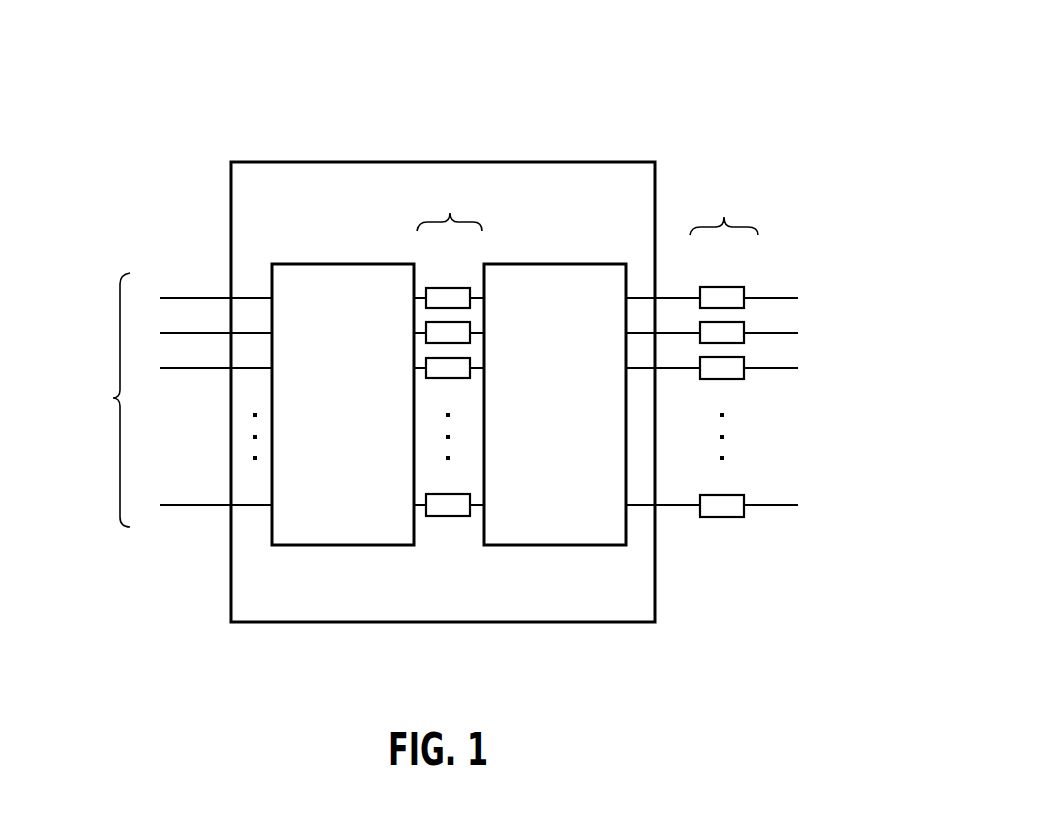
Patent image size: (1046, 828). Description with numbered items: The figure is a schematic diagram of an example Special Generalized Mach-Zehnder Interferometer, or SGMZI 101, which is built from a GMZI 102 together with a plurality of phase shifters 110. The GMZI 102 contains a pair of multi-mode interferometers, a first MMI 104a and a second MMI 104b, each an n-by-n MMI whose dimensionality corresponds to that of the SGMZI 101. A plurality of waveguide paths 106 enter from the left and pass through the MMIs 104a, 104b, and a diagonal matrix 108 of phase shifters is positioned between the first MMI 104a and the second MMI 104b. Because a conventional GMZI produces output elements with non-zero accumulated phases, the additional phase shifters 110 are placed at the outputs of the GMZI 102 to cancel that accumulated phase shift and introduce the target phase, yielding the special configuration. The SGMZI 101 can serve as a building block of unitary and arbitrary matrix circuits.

The Special Generalized Mach-Zehnder Interferometer (SGMZI) 101 is at (782, 69).
The GMZI 102 is at (308, 161).
The first MMI 104a is at (344, 546).
The second MMI 104b is at (560, 547).
The waveguide paths 106 is at (116, 398).
The diagonal matrix 108 is at (450, 212).
The phase shifters 110 is at (724, 217).